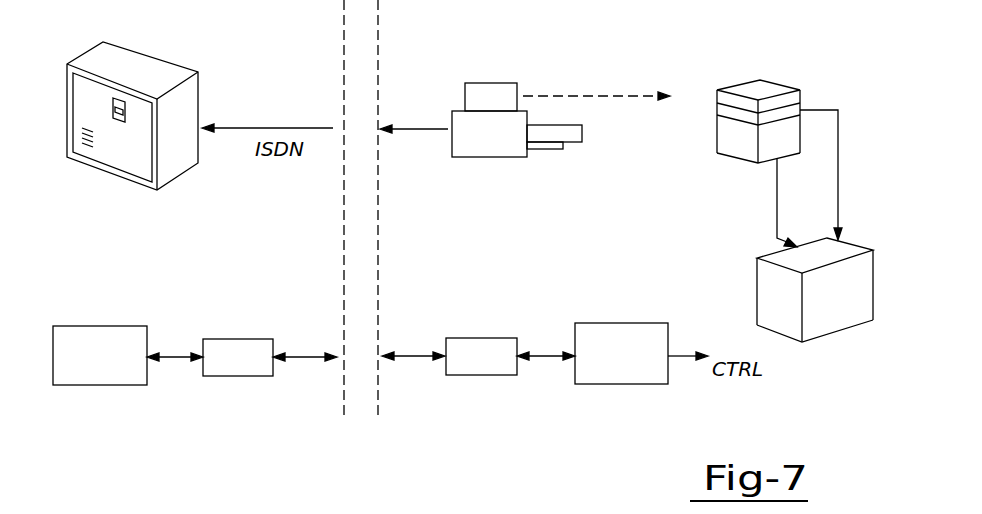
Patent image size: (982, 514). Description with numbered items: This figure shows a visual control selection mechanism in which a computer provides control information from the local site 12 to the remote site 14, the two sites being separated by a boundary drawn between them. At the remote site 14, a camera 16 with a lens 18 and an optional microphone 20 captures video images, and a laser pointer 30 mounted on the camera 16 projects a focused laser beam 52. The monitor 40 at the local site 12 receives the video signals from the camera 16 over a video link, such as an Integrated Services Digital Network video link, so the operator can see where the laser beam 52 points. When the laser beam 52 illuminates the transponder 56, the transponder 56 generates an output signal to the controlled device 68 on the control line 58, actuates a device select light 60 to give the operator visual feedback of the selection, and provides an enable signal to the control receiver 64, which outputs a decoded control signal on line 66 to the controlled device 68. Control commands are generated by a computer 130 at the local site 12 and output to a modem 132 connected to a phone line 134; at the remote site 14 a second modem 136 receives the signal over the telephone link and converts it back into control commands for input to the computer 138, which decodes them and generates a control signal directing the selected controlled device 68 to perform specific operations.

The local site 12 is at (185, 131).
The remote site 14 is at (509, 106).
The camera 16 is at (483, 143).
The lens 18 is at (562, 128).
The microphone 20 is at (548, 148).
The laser pointer 30 is at (498, 90).
The monitor 40 is at (130, 182).
The laser beam 52 is at (600, 93).
The transponder 56 is at (738, 120).
The control line 58 is at (840, 172).
The device select light 60 is at (760, 122).
The control receiver 64 is at (795, 135).
The line 66 is at (777, 195).
The controlled device 68 is at (835, 323).
The computer 130 is at (133, 275).
The modem 132 is at (233, 377).
The phone line 134 is at (300, 357).
The second modem 136 is at (483, 375).
The computer 138 is at (612, 323).